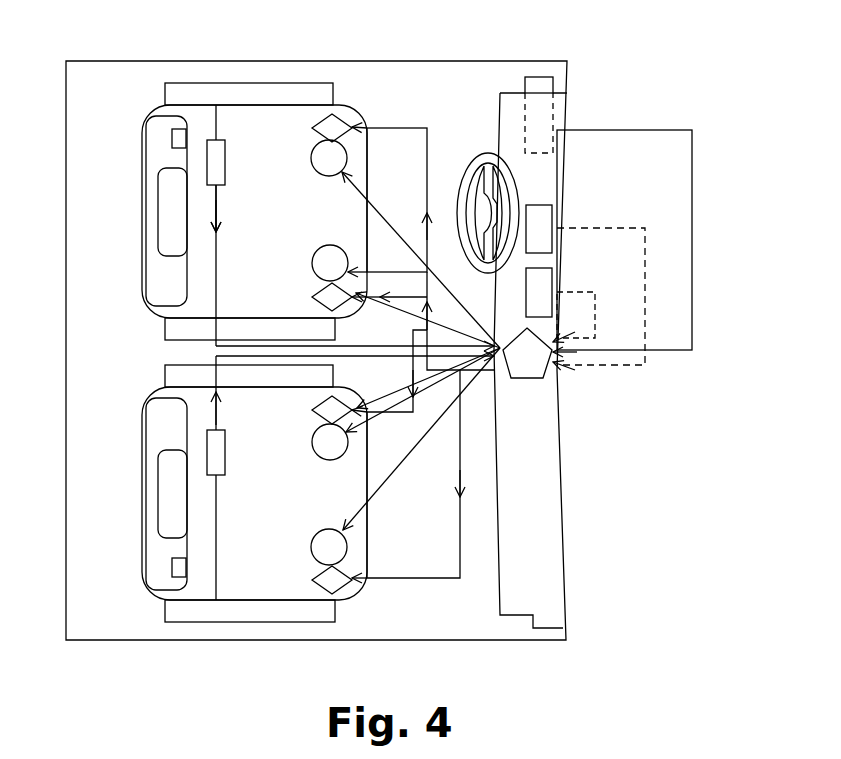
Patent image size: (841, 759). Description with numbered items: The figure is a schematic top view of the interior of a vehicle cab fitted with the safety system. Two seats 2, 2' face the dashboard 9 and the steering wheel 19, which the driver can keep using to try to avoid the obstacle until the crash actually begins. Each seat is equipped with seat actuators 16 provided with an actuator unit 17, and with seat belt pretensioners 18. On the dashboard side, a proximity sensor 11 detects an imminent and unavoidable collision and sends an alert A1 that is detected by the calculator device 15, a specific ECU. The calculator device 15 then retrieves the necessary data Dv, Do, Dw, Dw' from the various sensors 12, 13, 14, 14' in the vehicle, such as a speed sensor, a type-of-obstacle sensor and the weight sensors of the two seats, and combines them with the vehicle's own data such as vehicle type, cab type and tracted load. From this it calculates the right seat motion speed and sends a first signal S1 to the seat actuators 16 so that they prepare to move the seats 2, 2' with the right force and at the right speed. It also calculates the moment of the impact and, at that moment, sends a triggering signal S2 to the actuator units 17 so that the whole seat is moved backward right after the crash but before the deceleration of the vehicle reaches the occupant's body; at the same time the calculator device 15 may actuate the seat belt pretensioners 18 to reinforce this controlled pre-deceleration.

The seat 2 is at (221, 211).
The second seat 2' is at (217, 493).
The dashboard 9 is at (555, 487).
The proximity sensor 11 is at (540, 77).
The sensor 12 is at (548, 210).
The sensor 13 is at (548, 280).
The sensor 14 is at (231, 182).
The sensor 14' is at (205, 478).
The calculator device 15 is at (543, 378).
The seat actuators 16 is at (338, 116).
The actuator unit 17 is at (332, 178).
The seat belt pretensioners 18 is at (172, 138).
The steering wheel 19 is at (478, 158).
The alert A1 is at (692, 205).
The data Dv is at (645, 268).
The data Do is at (595, 315).
The data Dw is at (249, 187).
The data Dw' is at (145, 404).
The first signal S1 is at (440, 607).
The second signal S2 is at (400, 505).